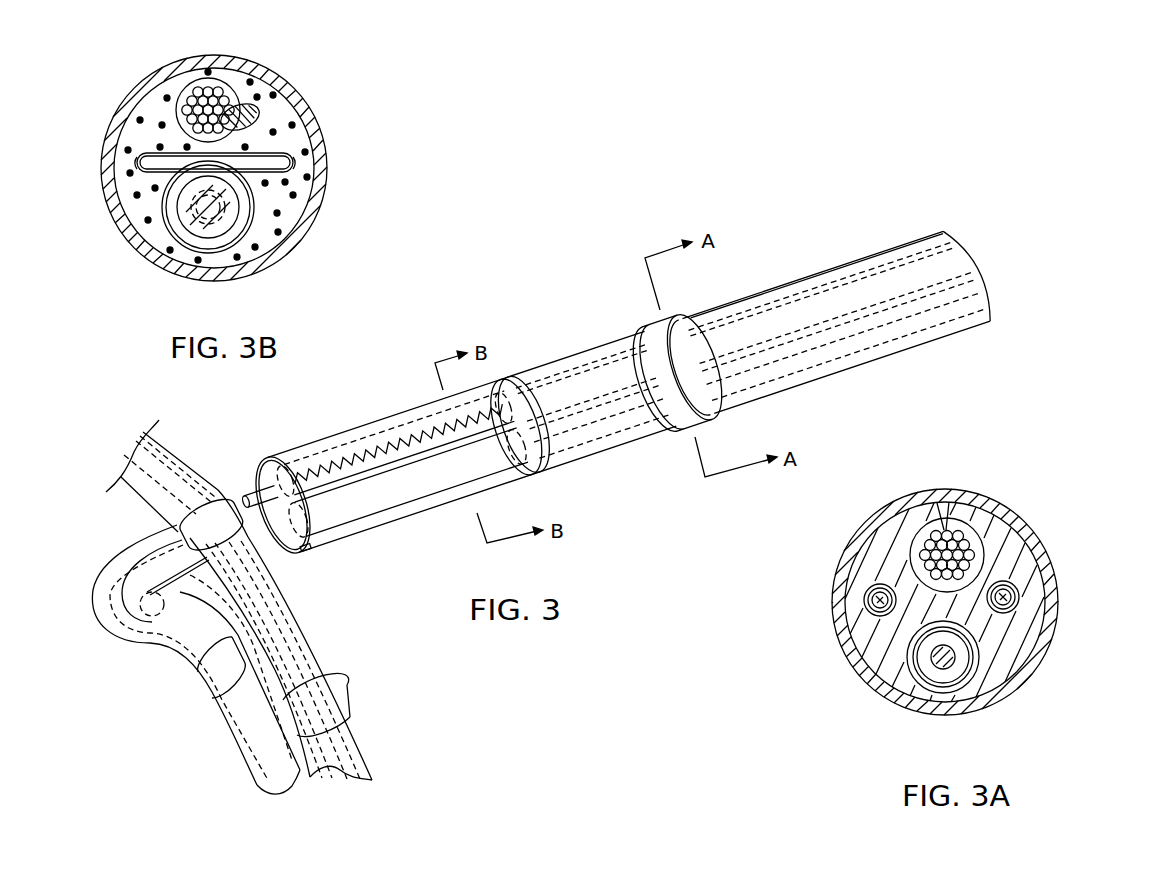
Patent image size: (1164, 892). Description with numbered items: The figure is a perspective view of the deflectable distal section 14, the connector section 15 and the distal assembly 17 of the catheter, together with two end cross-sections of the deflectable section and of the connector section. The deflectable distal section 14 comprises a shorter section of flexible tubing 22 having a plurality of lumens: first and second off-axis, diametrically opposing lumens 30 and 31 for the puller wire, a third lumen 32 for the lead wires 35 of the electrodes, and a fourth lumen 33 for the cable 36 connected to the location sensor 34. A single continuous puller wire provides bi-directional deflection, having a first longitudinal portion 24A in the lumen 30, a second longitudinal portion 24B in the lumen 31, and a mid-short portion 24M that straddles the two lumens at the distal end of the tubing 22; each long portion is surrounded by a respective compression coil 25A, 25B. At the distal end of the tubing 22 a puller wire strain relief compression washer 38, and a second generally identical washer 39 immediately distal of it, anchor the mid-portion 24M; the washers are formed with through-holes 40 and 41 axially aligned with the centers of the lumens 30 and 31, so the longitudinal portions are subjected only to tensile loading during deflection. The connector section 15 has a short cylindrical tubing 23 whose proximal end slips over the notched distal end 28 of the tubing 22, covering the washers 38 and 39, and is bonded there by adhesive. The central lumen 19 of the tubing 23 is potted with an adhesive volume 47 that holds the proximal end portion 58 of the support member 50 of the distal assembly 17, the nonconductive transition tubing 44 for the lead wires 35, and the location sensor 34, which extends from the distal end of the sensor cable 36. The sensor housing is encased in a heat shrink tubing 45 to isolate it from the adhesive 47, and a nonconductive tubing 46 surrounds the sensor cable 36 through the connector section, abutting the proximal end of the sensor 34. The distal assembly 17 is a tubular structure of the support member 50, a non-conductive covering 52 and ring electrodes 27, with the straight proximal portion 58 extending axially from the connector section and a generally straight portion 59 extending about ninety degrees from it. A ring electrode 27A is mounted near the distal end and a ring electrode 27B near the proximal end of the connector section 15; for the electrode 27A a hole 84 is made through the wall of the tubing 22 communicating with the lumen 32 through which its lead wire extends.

In FIG. 3, the deflectable distal section 14 is at (885, 251).
In FIG. 3A, the deflectable distal section 14 is at (817, 706).
In FIG. 3, the connector section 15 is at (518, 322).
In FIG. 3, the distal assembly 17 is at (193, 452).
In FIG. 3, the central lumen 19 is at (287, 463).
In FIG. 3B, the central lumen 19 is at (304, 192).
In FIG. 3, the tubing 22 is at (885, 357).
In FIG. 3, the cylindrical member or tubing 23 is at (380, 526).
In FIG. 3B, the cylindrical member or tubing 23 is at (273, 77).
In FIG. 3A, the cylindrical member or tubing 23 is at (873, 557).
In FIG. 3A, the first longitudinal proximal portion 24A is at (866, 595).
In FIG. 3A, the second longitudinal proximal portion 24B is at (1018, 590).
In FIG. 3B, the mid-short portion 24M is at (272, 156).
In FIG. 3A, the compression coil 25A is at (868, 612).
In FIG. 3A, the compression coil 25B is at (1009, 613).
In FIG. 3, the ring electrodes 27 is at (348, 685).
In FIG. 3A, the ring electrode 27A is at (1034, 529).
In FIG. 3, the ring electrode 27B is at (662, 326).
In FIG. 3, the outer circumferential notch 28 is at (612, 368).
In FIG. 3A, the first lumen 30 is at (868, 603).
In FIG. 3A, the second lumen 31 is at (1017, 598).
In FIG. 3A, the third lumen 32 is at (978, 541).
In FIG. 3A, the fourth lumen 33 is at (969, 691).
In FIG. 3, the location sensor 34 is at (432, 492).
In FIG. 3B, the location sensor 34 is at (190, 237).
In FIG. 3B, the lead wires 35 is at (226, 82).
In FIG. 3A, the lead wires 35 is at (930, 532).
In FIG. 3B, the sensor cable 36 is at (227, 227).
In FIG. 3A, the sensor cable 36 is at (944, 669).
In FIG. 3, the puller wire strain relief compression washer 38 is at (527, 383).
In FIG. 3, the second puller wire strain relief compression washer 39 is at (497, 388).
In FIG. 3B, the through-hole 40 is at (138, 162).
In FIG. 3B, the through-hole 41 is at (292, 162).
In FIG. 3, the nonconductive transition tubing 44 is at (347, 448).
In FIG. 3B, the nonconductive transition tubing 44 is at (187, 85).
In FIG. 3, the heat shrink cover or tubing 45 is at (322, 516).
In FIG. 3B, the heat shrink cover or tubing 45 is at (214, 233).
In FIG. 3B, the nonconductive tubing 46 is at (243, 212).
In FIG. 3A, the nonconductive tubing 46 is at (926, 682).
In FIG. 3B, the adhesive volume 47 is at (144, 221).
In FIG. 3, the support member 50 is at (318, 652).
In FIG. 3, the non-conductive covering 52 is at (360, 730).
In FIG. 3, the proximal end portion 58 is at (241, 493).
In FIG. 3B, the proximal end portion 58 is at (262, 113).
In FIG. 3, the generally straight portion 59 is at (174, 655).
In FIG. 3, the hole 84 is at (310, 552).
In FIG. 3A, the hole 84 is at (952, 520).